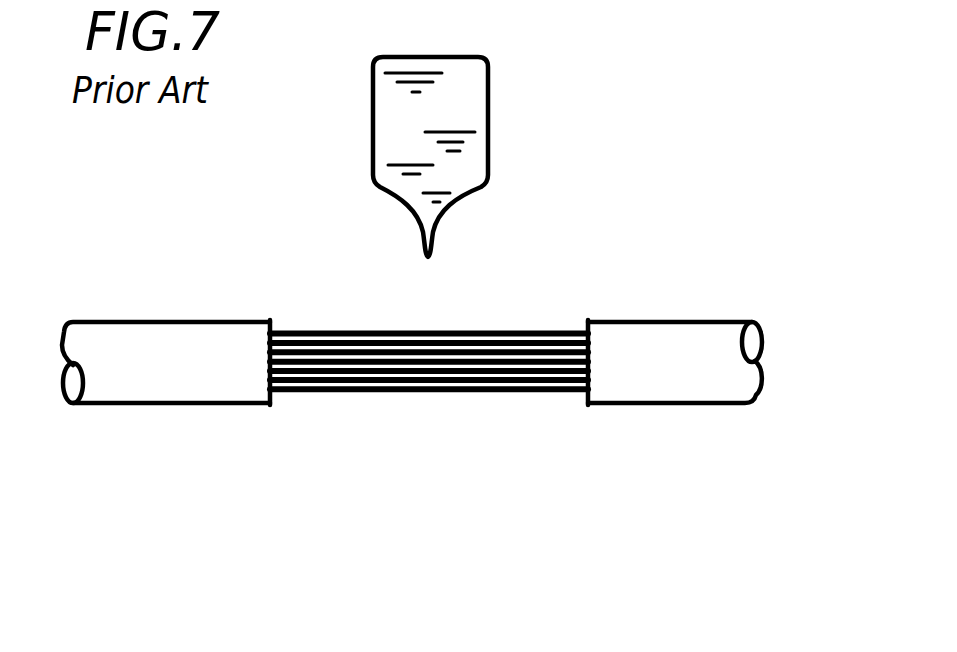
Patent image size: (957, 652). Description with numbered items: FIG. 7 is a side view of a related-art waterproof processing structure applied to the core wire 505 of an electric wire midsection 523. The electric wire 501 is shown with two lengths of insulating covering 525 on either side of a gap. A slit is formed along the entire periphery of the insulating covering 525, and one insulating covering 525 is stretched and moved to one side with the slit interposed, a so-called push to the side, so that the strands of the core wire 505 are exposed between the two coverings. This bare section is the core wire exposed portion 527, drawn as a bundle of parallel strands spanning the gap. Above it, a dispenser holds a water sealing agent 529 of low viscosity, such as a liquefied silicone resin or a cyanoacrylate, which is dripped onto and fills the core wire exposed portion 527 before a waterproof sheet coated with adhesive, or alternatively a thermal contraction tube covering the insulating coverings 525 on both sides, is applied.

The optical fiber cable 501 is at (142, 320).
The core wire 505 is at (447, 464).
The electric wire midsection 523 is at (429, 388).
The insulating covering 525 is at (280, 317).
The core wire exposed portion 527 is at (501, 330).
The water sealing agent 529 is at (473, 112).